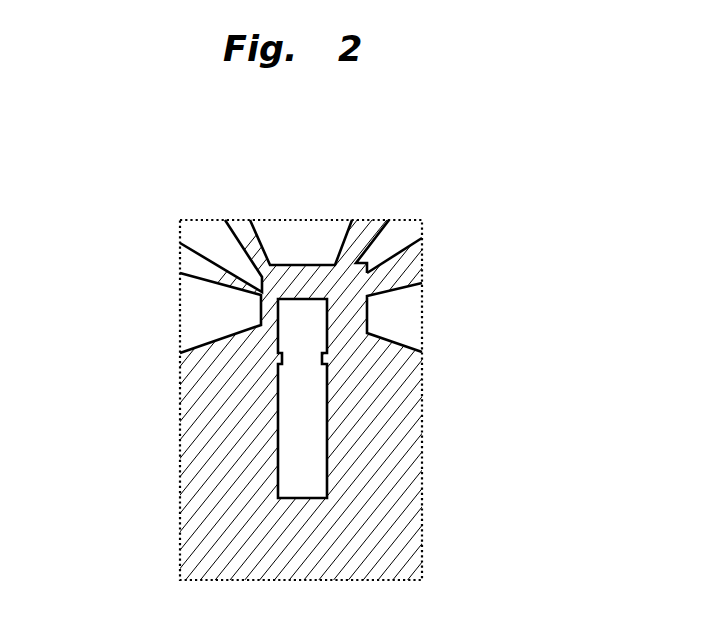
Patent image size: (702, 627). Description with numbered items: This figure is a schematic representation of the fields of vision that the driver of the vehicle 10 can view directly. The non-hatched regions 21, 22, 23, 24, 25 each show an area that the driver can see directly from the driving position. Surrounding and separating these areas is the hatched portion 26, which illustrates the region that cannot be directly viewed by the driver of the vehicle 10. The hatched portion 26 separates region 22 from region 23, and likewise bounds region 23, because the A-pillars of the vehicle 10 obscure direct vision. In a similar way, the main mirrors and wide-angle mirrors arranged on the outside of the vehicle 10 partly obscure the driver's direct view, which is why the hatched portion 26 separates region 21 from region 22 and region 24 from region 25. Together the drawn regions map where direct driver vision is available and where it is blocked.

The vehicle 10 is at (320, 485).
The region directly viewable by the driver 21 is at (200, 310).
The region directly viewable by the driver 22 is at (210, 242).
The region directly viewable by the driver 23 is at (283, 242).
The region directly viewable by the driver 24 is at (385, 253).
The region directly viewable by the driver 25 is at (405, 322).
The hatched portion 26 is at (368, 238).